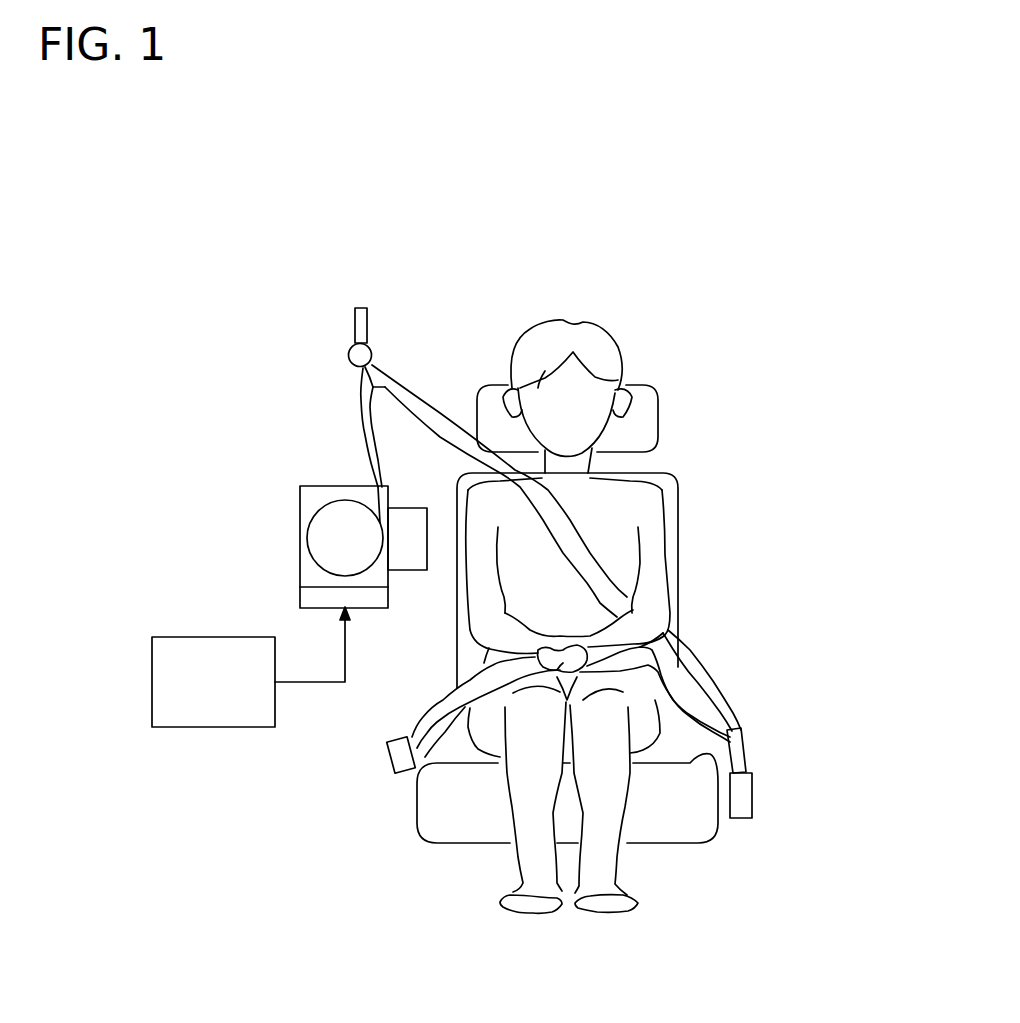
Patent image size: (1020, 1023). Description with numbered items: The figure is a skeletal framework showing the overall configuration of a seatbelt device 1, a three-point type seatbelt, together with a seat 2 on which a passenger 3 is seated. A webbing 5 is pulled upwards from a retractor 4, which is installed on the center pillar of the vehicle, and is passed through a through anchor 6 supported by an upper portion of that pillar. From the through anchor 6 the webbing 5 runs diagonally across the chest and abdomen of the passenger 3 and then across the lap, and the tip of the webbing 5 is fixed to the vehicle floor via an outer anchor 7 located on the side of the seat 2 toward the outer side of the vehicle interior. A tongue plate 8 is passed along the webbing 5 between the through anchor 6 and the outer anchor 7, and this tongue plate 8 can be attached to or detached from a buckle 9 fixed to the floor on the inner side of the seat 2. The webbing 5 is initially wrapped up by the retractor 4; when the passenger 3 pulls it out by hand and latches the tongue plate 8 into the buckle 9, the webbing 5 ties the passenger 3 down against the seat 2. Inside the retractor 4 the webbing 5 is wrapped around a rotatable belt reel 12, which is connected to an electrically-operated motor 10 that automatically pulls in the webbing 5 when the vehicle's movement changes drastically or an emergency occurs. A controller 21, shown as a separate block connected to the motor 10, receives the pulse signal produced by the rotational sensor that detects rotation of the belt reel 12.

The seatbelt device 1 is at (405, 330).
The seat 2 is at (681, 822).
The passenger 3 is at (612, 335).
The retractor 4 is at (316, 560).
The webbing 5 is at (707, 680).
The through anchor 6 is at (362, 373).
The outer anchor 7 is at (398, 752).
The tongue plate 8 is at (746, 757).
The buckle 9 is at (740, 795).
The motor 10 is at (376, 595).
The belt reel 12 is at (327, 540).
The controller 21 is at (213, 717).